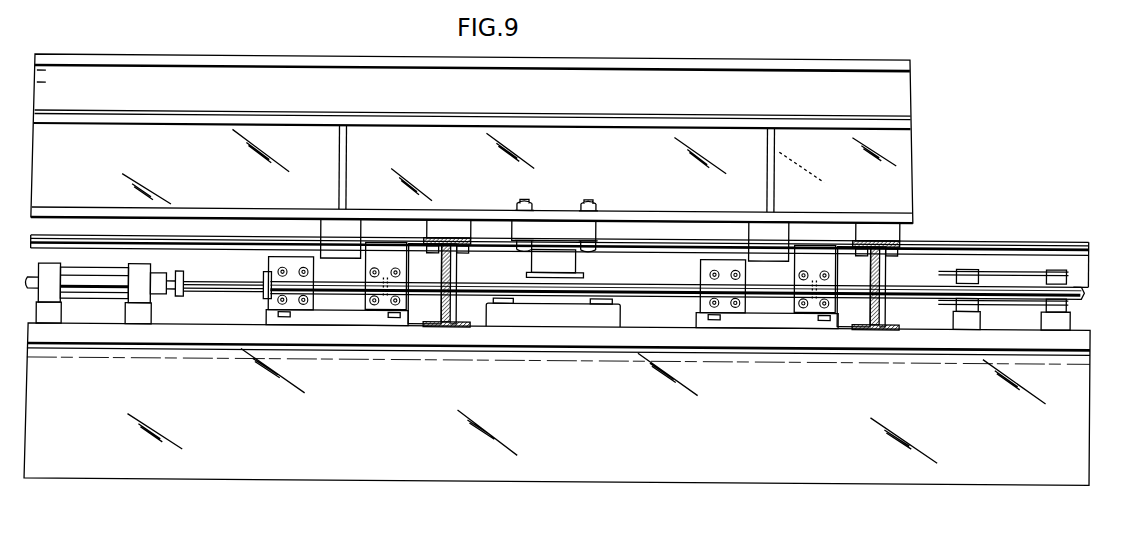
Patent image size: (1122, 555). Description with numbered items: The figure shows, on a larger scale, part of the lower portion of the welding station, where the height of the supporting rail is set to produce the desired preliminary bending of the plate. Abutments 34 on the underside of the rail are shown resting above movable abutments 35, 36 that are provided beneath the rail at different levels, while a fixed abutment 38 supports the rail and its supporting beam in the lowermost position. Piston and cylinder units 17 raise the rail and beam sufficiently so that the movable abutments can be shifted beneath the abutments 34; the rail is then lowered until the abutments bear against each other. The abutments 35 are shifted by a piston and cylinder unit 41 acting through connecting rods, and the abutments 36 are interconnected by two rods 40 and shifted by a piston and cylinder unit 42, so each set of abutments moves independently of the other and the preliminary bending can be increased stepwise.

The piston and cylinder unit 17 is at (546, 259).
The abutment 34 is at (331, 226).
The abutment 35 is at (272, 266).
The abutment 36 is at (387, 300).
The abutment 38 is at (448, 231).
The rod 40 is at (661, 277).
The piston and cylinder unit 41 is at (104, 249).
The piston and cylinder unit 42 is at (1006, 265).